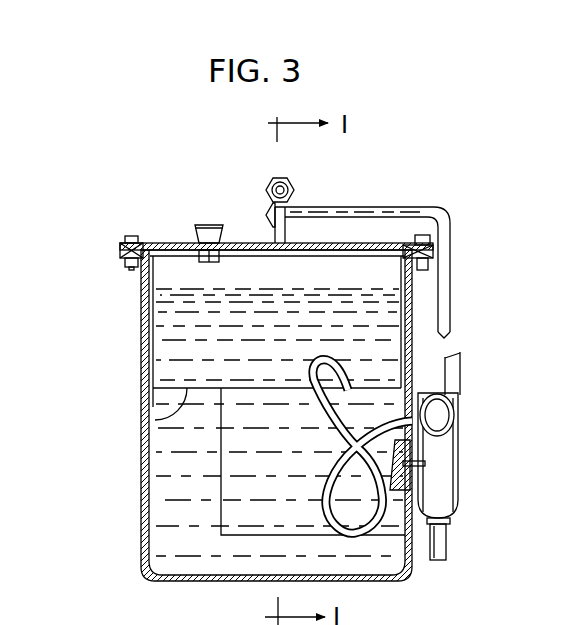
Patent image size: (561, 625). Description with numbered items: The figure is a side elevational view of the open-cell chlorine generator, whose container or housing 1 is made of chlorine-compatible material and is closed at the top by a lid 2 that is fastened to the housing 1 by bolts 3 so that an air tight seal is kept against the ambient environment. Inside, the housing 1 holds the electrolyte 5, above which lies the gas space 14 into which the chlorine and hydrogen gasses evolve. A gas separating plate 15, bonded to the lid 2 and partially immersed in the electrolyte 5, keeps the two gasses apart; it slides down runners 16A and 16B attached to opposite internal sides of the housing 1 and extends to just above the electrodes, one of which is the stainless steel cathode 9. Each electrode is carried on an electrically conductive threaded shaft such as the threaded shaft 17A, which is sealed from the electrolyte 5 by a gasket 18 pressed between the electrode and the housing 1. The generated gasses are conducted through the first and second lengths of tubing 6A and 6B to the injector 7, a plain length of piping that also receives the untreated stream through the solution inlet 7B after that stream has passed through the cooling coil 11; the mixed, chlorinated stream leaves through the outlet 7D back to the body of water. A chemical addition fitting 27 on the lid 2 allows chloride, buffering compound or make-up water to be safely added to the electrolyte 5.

The housing 1 is at (145, 460).
The lid 2 is at (192, 244).
The bolts 3 is at (130, 240).
The electrolyte 5 is at (170, 485).
The cathode 9 is at (252, 530).
The cooling coil 11 is at (376, 533).
The gas space 14 is at (165, 276).
The gas separating plate 15 is at (147, 422).
The runner 16A is at (147, 345).
The runner 16B is at (407, 347).
The threaded shaft 17A is at (418, 464).
The gasket 18 is at (410, 470).
The chemical addition fitting 27 is at (204, 227).
The first length of tubing 6A is at (422, 207).
The second length of tubing 6B is at (296, 193).
The injector 7 is at (462, 488).
The solution inlet 7B is at (455, 414).
The outlet 7D is at (457, 525).